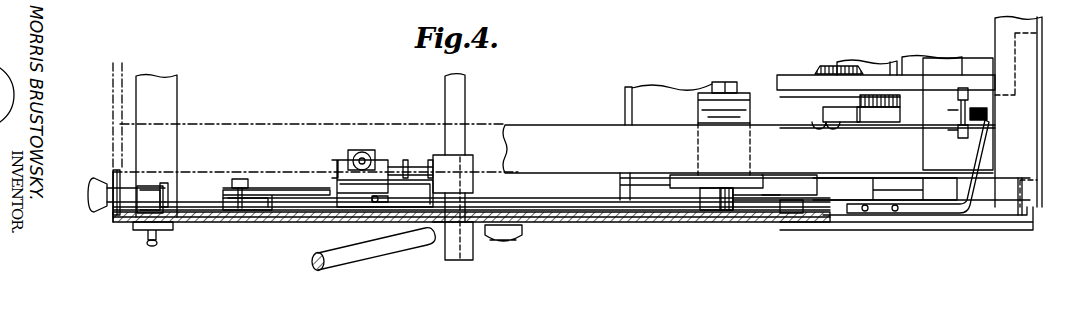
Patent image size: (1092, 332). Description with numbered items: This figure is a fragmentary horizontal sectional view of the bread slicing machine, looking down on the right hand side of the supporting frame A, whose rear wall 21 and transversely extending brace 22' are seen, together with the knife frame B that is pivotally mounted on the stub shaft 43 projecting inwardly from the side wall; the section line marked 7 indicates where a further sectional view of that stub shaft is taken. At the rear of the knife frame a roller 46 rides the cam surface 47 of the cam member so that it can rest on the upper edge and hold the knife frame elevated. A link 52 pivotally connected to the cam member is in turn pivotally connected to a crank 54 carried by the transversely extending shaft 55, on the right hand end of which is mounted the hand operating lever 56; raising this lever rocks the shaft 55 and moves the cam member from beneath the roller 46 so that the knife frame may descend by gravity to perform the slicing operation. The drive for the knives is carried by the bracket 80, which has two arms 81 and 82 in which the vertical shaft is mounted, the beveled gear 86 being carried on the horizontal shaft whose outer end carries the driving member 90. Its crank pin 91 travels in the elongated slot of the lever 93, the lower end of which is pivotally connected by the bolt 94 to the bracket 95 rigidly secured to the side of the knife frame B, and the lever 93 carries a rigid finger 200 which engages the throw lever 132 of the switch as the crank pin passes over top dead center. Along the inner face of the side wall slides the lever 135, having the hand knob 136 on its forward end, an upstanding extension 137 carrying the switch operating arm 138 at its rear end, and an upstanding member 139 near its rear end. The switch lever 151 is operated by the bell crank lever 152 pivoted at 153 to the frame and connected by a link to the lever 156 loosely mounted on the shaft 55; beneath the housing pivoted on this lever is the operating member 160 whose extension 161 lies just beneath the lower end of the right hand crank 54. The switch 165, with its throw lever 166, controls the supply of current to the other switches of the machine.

The hand knob 136 is at (96, 178).
The switch 165 is at (168, 190).
The throw lever 166 is at (146, 243).
The lever 135 is at (193, 226).
The switch lever 151 is at (245, 179).
The bell crank lever 152 is at (282, 197).
The pivot 153 is at (256, 188).
The operating member 160 is at (376, 160).
The extension 161 is at (420, 160).
The lever 156 is at (390, 202).
The shaft 55 is at (447, 100).
The crank 54 is at (473, 193).
The hand operating lever 56 is at (312, 260).
The link 52 is at (577, 198).
The supporting frame A is at (587, 223).
The knife frame B is at (560, 130).
The brace 22' is at (651, 103).
The bolt 94 is at (727, 82).
The bracket 95 is at (698, 105).
The lever 93 is at (758, 104).
The driving member 90 is at (803, 97).
The rigid finger 200 is at (883, 115).
The crank pin 91 is at (830, 128).
The beveled gear 86 is at (820, 66).
The arm 82 is at (870, 62).
The arm 81 is at (940, 60).
The bracket 80 is at (987, 88).
The throw lever 132 is at (957, 117).
The switch operating arm 138 is at (987, 115).
The upstanding extension 137 is at (957, 210).
The rear wall 21 is at (1050, 183).
The cam surface 47 is at (747, 195).
The roller 46 is at (705, 203).
The upstanding member 139 is at (783, 203).
The stub shaft 43 is at (908, 193).
The section line 7 is at (912, 16).